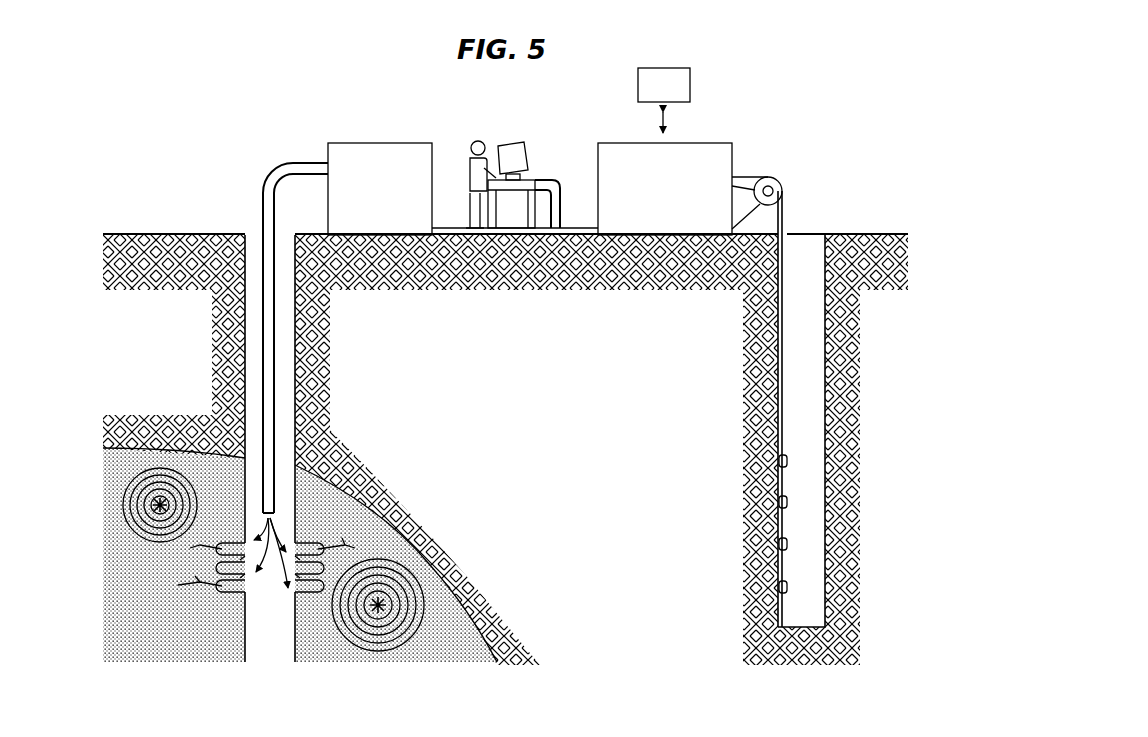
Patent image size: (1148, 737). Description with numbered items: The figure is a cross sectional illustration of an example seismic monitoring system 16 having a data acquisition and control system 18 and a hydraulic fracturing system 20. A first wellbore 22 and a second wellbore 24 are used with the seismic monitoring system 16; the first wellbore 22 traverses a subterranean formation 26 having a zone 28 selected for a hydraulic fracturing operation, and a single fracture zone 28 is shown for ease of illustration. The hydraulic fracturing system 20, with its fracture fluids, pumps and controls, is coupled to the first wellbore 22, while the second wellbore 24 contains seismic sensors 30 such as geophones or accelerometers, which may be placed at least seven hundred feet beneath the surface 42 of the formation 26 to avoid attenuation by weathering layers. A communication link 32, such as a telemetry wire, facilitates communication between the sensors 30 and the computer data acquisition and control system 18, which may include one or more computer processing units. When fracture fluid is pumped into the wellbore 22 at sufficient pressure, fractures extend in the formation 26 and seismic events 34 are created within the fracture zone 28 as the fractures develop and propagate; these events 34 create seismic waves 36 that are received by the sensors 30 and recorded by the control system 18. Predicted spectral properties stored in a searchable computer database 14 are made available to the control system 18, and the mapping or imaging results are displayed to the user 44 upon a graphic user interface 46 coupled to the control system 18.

The searchable computer database 14 is at (690, 88).
The seismic monitoring system 16 is at (792, 167).
The data acquisition and control system 18 is at (700, 143).
The hydraulic fracturing system 20 is at (372, 143).
The first wellbore 22 is at (248, 337).
The second wellbore 24 is at (822, 357).
The subterranean formation 26 is at (357, 292).
The fracture zone 28 is at (167, 634).
The seismic sensors 30 is at (777, 587).
The communication link 32 is at (785, 216).
The seismic events 34 is at (170, 478).
The seismic waves 36 is at (137, 456).
The surface 42 is at (177, 233).
The user 44 is at (463, 150).
The graphic user interface 46 is at (519, 157).